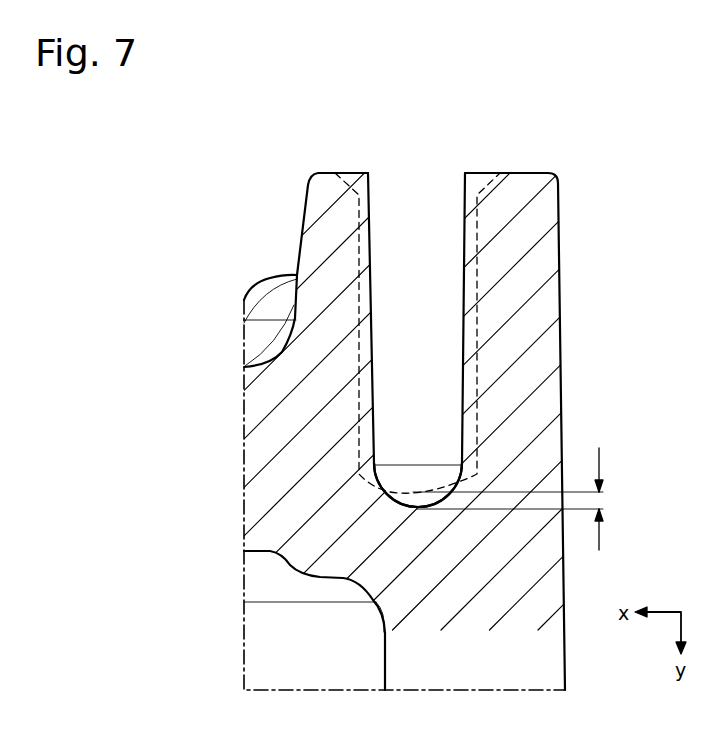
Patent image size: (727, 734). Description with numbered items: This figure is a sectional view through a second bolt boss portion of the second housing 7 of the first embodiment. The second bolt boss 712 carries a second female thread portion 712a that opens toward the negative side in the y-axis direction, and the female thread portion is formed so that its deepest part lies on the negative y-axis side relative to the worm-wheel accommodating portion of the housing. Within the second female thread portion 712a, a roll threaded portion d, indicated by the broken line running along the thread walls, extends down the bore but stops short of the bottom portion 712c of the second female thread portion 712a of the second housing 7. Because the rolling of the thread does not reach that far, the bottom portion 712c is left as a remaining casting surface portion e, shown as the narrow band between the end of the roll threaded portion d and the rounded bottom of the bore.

The second housing 7 is at (272, 265).
The second bolt boss 712 is at (534, 318).
The second female thread portion 712a is at (387, 222).
The bottom portion 712c is at (405, 499).
The roll threaded portion d is at (477, 280).
The remaining casting surface portion e is at (516, 499).